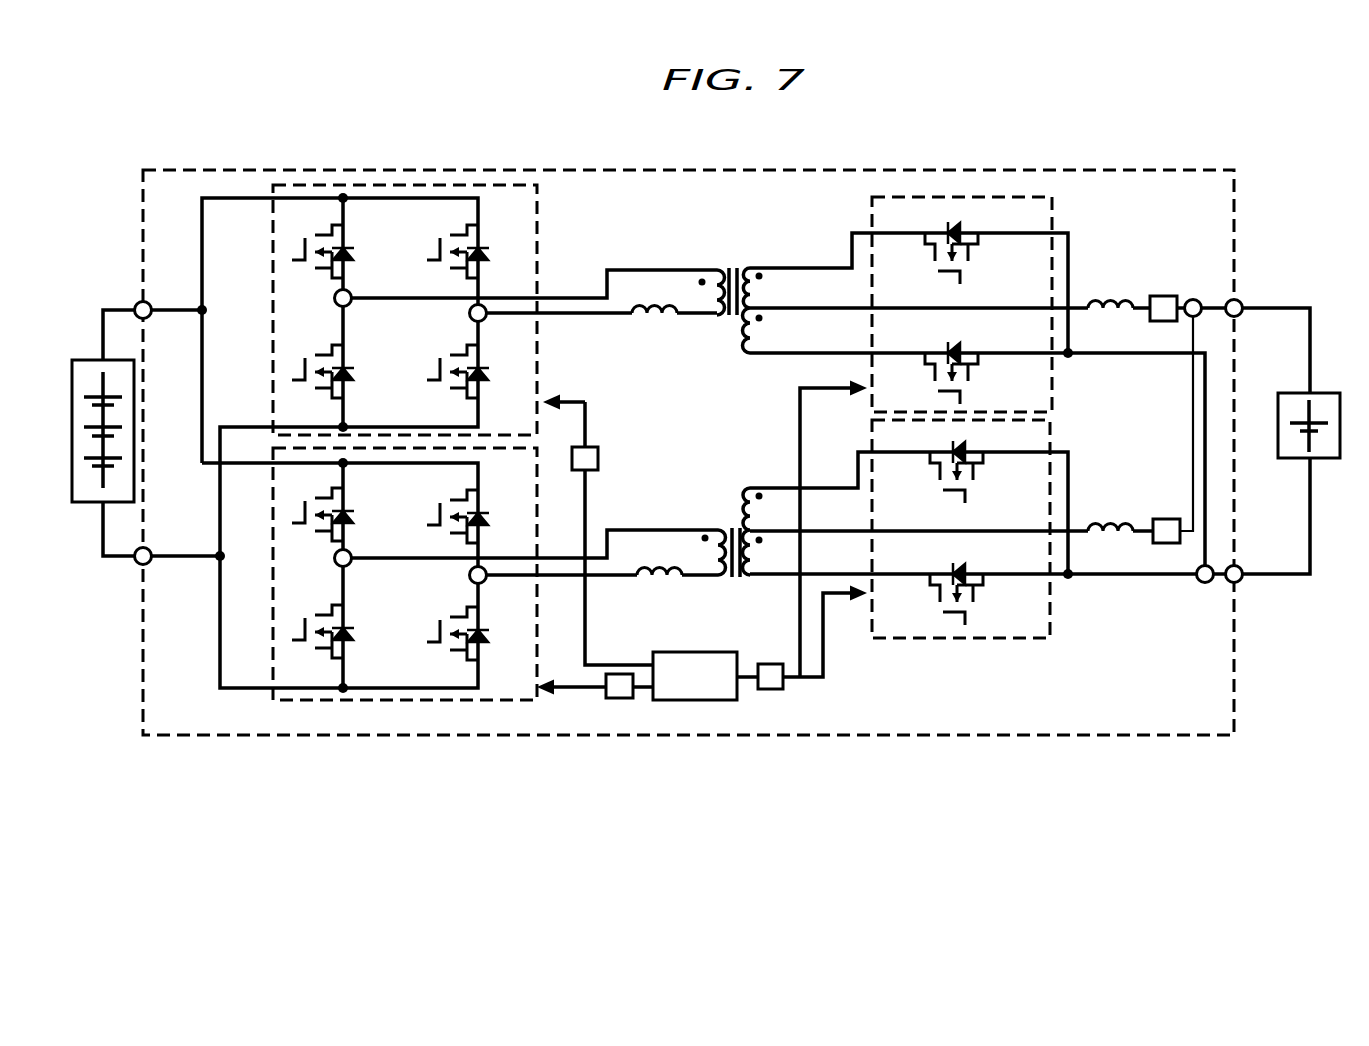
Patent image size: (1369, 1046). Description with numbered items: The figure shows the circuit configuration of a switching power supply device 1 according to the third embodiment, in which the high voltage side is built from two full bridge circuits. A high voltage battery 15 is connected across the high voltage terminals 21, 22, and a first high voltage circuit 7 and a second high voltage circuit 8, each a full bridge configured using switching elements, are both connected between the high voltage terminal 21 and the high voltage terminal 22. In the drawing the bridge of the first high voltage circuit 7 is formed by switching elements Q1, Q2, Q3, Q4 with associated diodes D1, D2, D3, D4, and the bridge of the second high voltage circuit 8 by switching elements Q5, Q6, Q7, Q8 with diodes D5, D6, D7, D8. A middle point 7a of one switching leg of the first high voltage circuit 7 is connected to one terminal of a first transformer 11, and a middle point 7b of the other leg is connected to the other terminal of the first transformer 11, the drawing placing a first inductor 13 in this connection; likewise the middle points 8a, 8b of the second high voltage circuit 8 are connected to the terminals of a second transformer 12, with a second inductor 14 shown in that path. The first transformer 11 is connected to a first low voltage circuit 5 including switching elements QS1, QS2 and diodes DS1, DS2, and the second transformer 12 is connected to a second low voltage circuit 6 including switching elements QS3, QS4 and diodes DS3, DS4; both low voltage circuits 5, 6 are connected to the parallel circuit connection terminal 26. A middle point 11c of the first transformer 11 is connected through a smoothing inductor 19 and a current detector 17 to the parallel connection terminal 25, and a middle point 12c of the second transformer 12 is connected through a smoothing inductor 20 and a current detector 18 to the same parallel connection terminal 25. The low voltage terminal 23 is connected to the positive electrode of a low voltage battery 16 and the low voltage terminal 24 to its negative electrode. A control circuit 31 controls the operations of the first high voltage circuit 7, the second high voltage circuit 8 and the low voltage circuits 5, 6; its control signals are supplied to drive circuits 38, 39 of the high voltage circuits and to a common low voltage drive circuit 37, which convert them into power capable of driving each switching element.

The switching power supply device 1 is at (1235, 686).
The first low voltage circuit 5 is at (962, 304).
The second low voltage circuit 6 is at (961, 529).
The first high voltage circuit 7 is at (267, 269).
The middle point of switching leg of first high voltage circuit 7a is at (336, 304).
The middle point of switching leg of first high voltage circuit 7b is at (471, 320).
The second high voltage circuit 8 is at (271, 530).
The middle point of switching leg of second high voltage circuit 8a is at (336, 564).
The middle point of switching leg of second high voltage circuit 8b is at (470, 582).
The first transformer 11 is at (728, 264).
The middle point of first transformer 11c is at (746, 318).
The second transformer 12 is at (740, 578).
The middle point of second transformer 12c is at (746, 500).
The first inductor 13 is at (663, 320).
The second inductor 14 is at (663, 578).
The high voltage battery 15 is at (96, 359).
The low voltage battery 16 is at (1292, 462).
The current detector 17 is at (1161, 294).
The current detector 18 is at (1165, 546).
The smoothing inductor 19 is at (1101, 296).
The smoothing inductor 20 is at (1108, 522).
The high voltage terminal 21 is at (138, 300).
The high voltage terminal 22 is at (136, 566).
The low voltage terminal 23 is at (1244, 302).
The low voltage terminal 24 is at (1234, 584).
The parallel connection terminal 25 is at (1194, 296).
The parallel circuit connection terminal 26 is at (1200, 590).
The control circuit 31 is at (689, 650).
The common drive circuit of low voltage circuit 37 is at (785, 690).
The drive circuit of high voltage circuit 38 is at (598, 447).
The drive circuit of high voltage circuit 39 is at (603, 696).
The switching element Q1 is at (315, 240).
The switching element Q2 is at (315, 386).
The switching element Q3 is at (449, 240).
The switching element Q4 is at (449, 386).
The switching element Q5 is at (316, 502).
The switching element Q6 is at (316, 647).
The switching element Q7 is at (449, 503).
The switching element Q8 is at (449, 648).
The diode D1 is at (361, 268).
The diode D2 is at (361, 359).
The diode D3 is at (498, 268).
The diode D4 is at (498, 370).
The diode D5 is at (361, 533).
The diode D6 is at (361, 619).
The diode D7 is at (498, 502).
The diode D8 is at (498, 621).
The switching element QS1 is at (929, 382).
The switching element QS2 is at (929, 270).
The switching element QS3 is at (934, 605).
The switching element QS4 is at (934, 485).
The diode DS1 is at (991, 342).
The diode DS2 is at (989, 220).
The diode DS3 is at (963, 558).
The diode DS4 is at (992, 440).